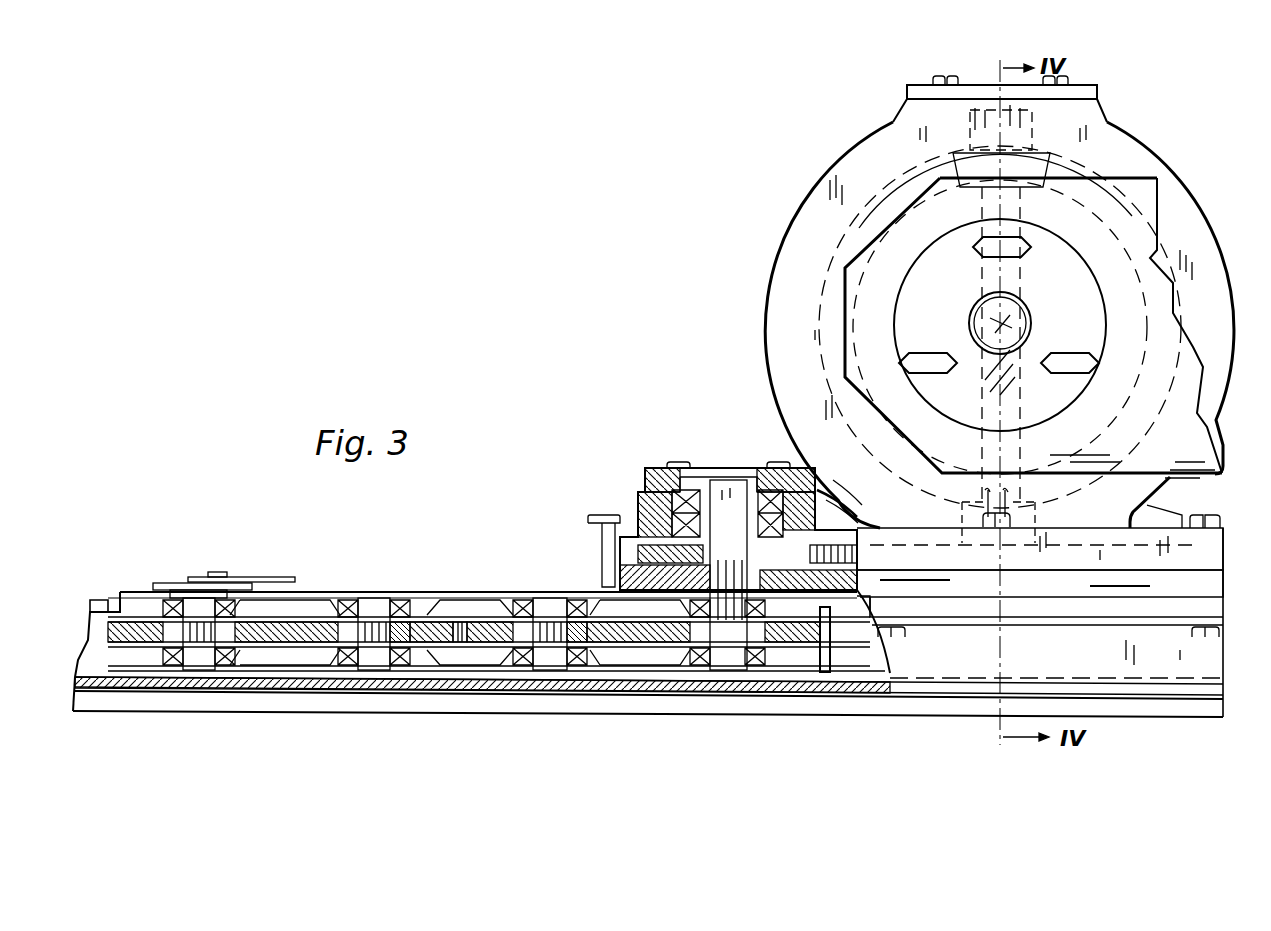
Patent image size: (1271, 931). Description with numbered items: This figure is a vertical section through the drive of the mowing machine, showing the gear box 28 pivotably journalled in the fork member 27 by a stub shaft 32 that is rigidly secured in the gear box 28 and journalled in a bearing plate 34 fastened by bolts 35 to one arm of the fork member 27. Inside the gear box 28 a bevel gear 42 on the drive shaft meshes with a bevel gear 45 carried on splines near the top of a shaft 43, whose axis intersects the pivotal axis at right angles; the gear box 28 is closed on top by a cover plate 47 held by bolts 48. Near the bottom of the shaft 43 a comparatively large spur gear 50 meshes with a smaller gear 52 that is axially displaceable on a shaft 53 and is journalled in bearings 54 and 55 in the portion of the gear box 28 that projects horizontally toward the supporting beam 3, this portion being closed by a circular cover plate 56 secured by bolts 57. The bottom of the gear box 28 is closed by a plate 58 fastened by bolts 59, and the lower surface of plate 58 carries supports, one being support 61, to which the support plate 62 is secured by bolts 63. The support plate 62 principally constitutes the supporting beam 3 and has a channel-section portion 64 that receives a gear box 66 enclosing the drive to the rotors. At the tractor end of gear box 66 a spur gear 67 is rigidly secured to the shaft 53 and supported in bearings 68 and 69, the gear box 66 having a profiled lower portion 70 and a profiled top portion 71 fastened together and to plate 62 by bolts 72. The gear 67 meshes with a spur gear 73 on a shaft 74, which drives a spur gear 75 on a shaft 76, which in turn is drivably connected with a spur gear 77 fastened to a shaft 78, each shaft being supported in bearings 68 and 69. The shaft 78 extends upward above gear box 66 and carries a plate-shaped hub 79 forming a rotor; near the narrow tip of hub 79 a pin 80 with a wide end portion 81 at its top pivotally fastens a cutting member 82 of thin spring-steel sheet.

The supporting beam 3 is at (482, 582).
The fork member 27 is at (1160, 328).
The gear box 28 is at (756, 330).
The stub shaft 32 is at (972, 318).
The bearing plate 34 is at (1055, 392).
The bolts 35 is at (1072, 350).
The bevel gear 42 is at (828, 272).
The shaft 43 is at (1013, 283).
The bevel gear 45 is at (1043, 166).
The cover plate 47 is at (1097, 95).
The bolts 48 is at (930, 80).
The spur gear 50 is at (1100, 527).
The gear 52 is at (640, 555).
The shaft 53 is at (728, 546).
The bearing 54 is at (853, 512).
The bearing 55 is at (836, 488).
The cover plate 56 is at (645, 470).
The bolts 57 is at (680, 462).
The plate 58 is at (1200, 588).
The bolts 59 is at (608, 515).
The support 61 is at (1105, 622).
The support plate 62 is at (1237, 676).
The bolts 63 is at (905, 634).
The channel-section portion 64 is at (965, 714).
The gear box 66 is at (858, 650).
The spur gear 67 is at (815, 673).
The bearings 68 is at (160, 650).
The bearings 69 is at (168, 598).
The lower portion 70 is at (460, 647).
The top portion 71 is at (456, 592).
The bolts 72 is at (868, 602).
The spur gear 73 is at (600, 647).
The shaft 74 is at (550, 600).
The spur gear 75 is at (418, 647).
The shaft 76 is at (375, 600).
The spur gear 77 is at (104, 612).
The shaft 78 is at (200, 671).
The hub 79 is at (180, 590).
The pin 80 is at (225, 572).
The wide end portion 81 is at (222, 583).
The cutting member 82 is at (283, 577).